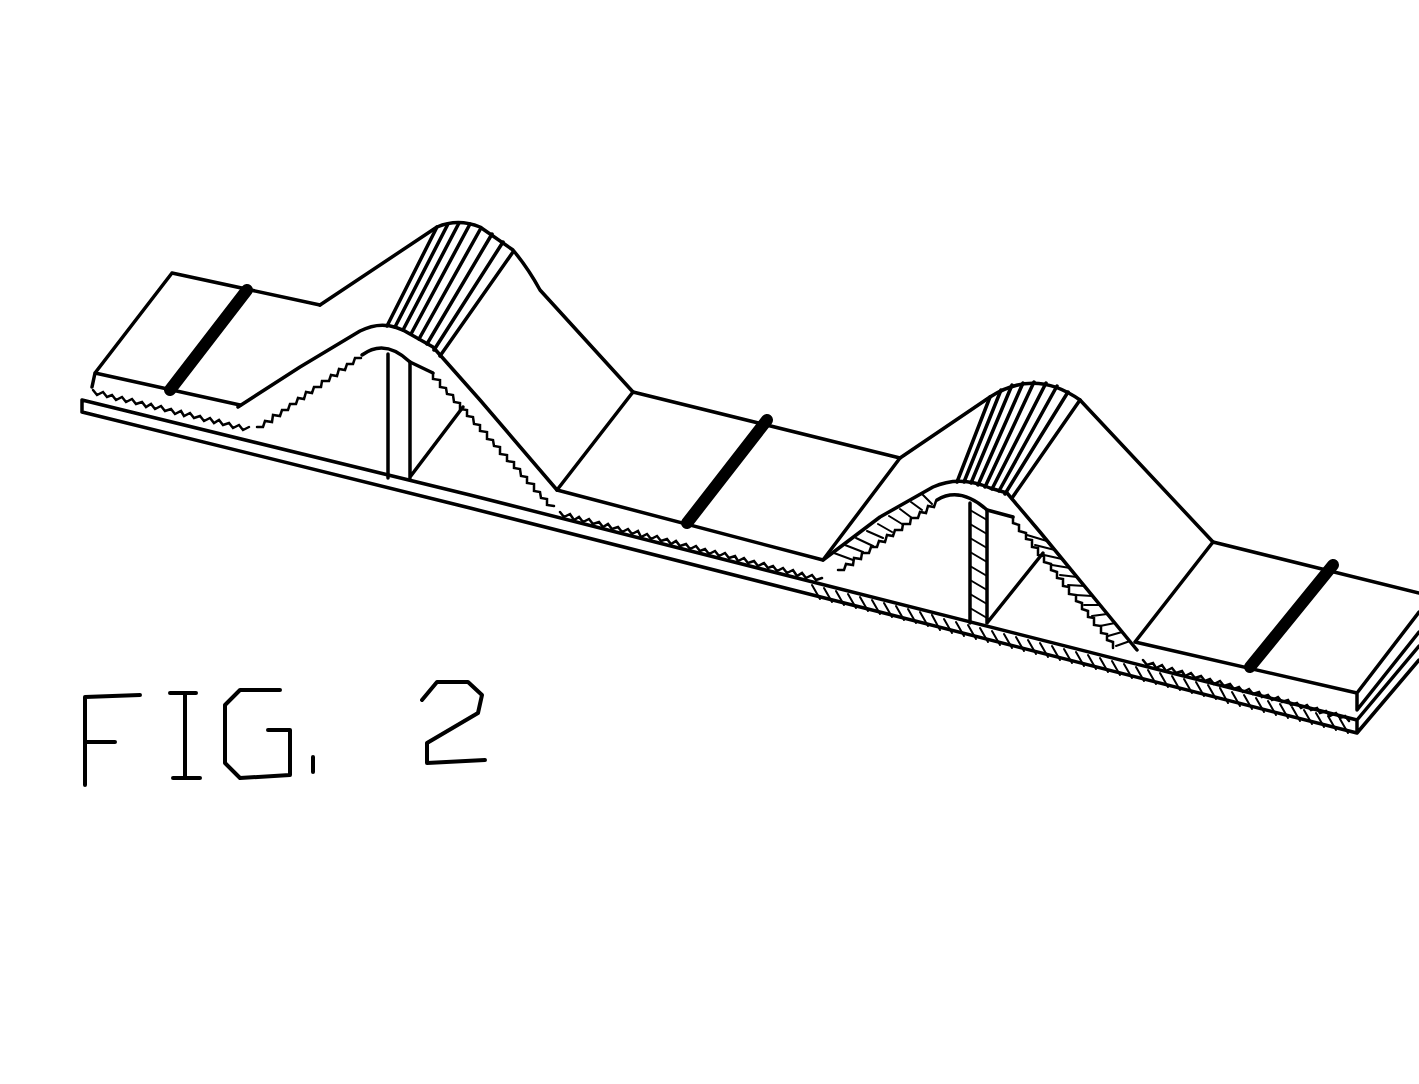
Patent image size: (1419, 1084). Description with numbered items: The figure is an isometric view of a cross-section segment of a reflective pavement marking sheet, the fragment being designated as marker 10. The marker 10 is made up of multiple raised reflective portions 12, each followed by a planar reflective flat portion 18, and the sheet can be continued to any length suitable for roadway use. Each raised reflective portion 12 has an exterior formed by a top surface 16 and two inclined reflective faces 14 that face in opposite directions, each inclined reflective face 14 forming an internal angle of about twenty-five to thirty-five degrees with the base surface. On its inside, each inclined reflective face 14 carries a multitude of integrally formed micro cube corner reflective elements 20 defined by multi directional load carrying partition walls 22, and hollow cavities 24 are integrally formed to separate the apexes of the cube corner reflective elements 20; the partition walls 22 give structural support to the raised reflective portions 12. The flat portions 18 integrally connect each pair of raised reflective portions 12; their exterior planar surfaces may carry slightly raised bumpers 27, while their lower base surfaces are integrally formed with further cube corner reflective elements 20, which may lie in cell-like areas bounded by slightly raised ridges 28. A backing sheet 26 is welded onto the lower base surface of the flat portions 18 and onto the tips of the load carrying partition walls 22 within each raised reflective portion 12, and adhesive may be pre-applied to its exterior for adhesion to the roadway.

The marker 10 is at (778, 381).
The raised reflective portion 12 is at (1102, 409).
The inclined reflective face 14 is at (328, 330).
The top surface 16 is at (475, 227).
The planar reflective flat portion 18 is at (870, 473).
The micro cube corner reflective element 20 is at (293, 403).
The multi directional load carrying partition wall 22 is at (420, 430).
The hollow cavity 24 is at (912, 577).
The backing sheet 26 is at (930, 633).
The slightly raised bumper 27 is at (1327, 560).
The slightly raised ridge 28 is at (1330, 727).